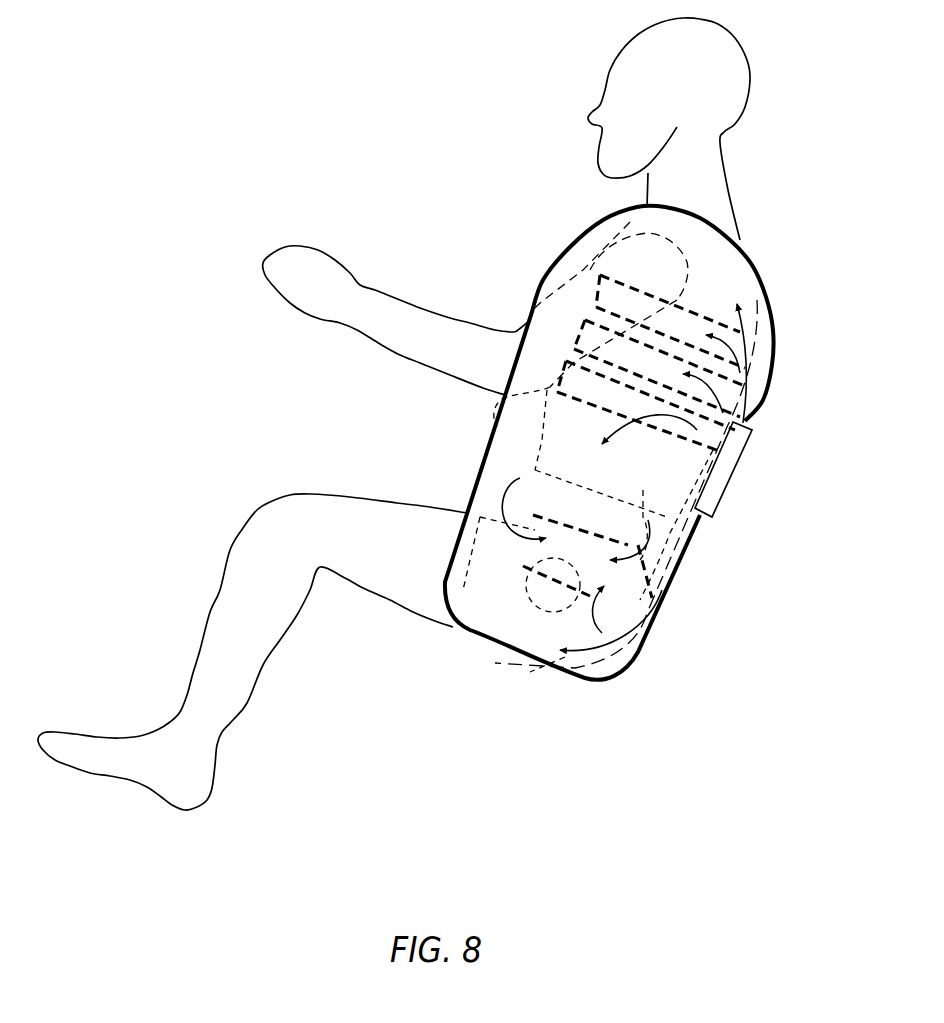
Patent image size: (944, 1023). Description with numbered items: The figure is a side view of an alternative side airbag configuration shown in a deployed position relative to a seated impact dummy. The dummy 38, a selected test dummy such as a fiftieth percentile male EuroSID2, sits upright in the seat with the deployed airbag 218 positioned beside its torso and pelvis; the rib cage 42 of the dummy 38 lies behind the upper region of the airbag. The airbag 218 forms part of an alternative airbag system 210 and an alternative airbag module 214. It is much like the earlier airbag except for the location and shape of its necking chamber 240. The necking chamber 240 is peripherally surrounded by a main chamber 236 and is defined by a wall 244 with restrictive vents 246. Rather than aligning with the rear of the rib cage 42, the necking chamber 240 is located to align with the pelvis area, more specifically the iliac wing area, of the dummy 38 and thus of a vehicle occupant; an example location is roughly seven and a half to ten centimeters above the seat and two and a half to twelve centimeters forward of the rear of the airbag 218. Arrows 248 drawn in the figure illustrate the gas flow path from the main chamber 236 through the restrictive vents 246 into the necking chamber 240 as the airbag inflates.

The test dummy 38 is at (750, 82).
The rib cage 42 is at (545, 428).
The airbag system 210 is at (769, 525).
The airbag module 214 is at (698, 539).
The airbag 218 is at (769, 271).
The main chamber 236 is at (510, 619).
The necking chamber 240 is at (634, 436).
The wall 244 is at (470, 558).
The restrictive vents 246 is at (462, 518).
The arrows 248 is at (697, 425).